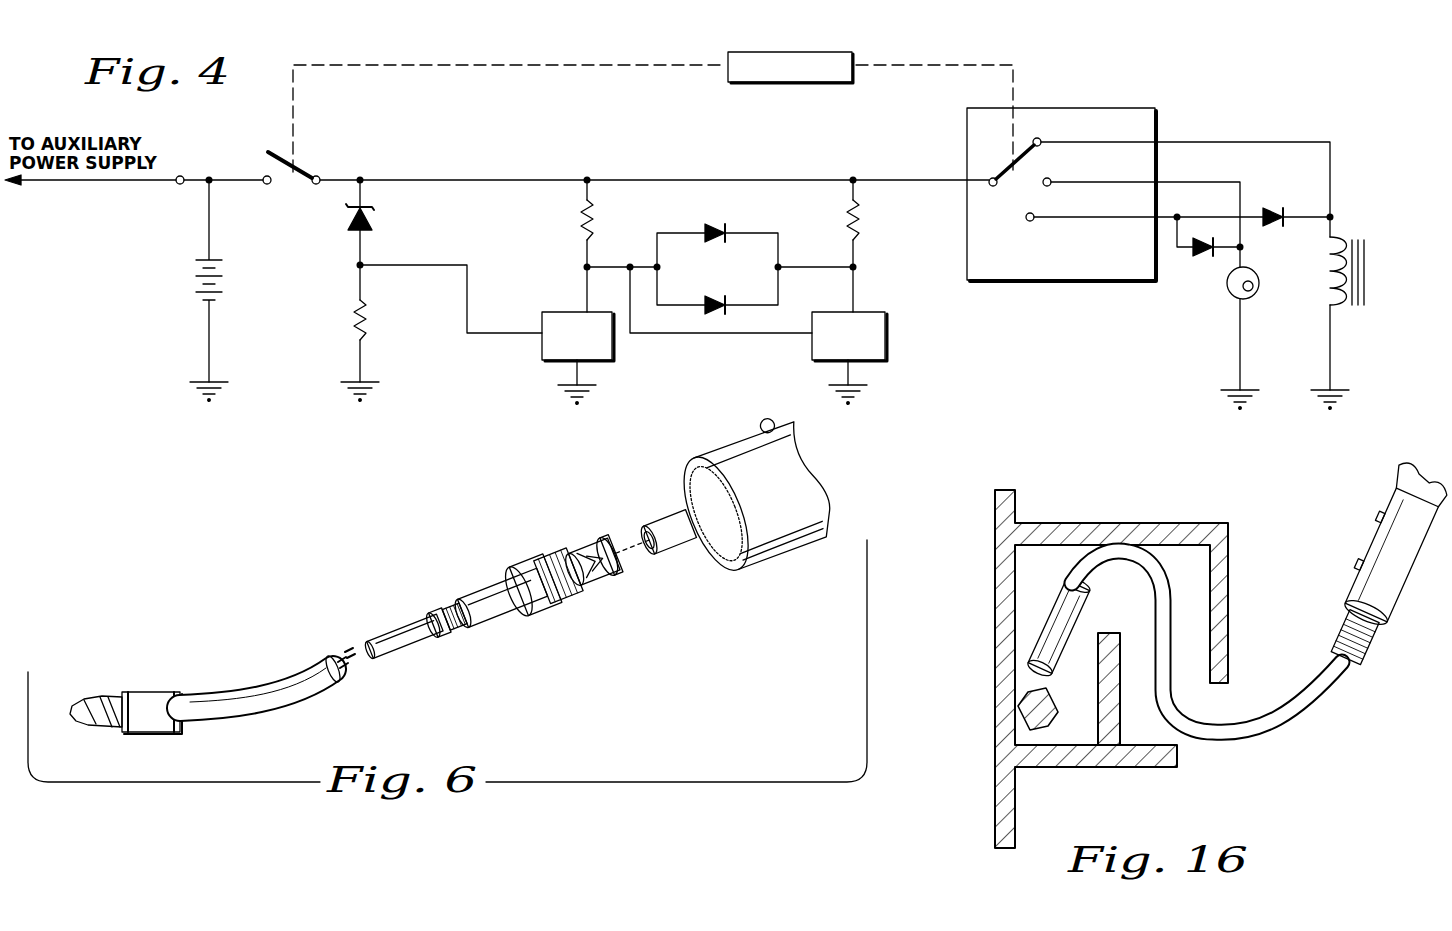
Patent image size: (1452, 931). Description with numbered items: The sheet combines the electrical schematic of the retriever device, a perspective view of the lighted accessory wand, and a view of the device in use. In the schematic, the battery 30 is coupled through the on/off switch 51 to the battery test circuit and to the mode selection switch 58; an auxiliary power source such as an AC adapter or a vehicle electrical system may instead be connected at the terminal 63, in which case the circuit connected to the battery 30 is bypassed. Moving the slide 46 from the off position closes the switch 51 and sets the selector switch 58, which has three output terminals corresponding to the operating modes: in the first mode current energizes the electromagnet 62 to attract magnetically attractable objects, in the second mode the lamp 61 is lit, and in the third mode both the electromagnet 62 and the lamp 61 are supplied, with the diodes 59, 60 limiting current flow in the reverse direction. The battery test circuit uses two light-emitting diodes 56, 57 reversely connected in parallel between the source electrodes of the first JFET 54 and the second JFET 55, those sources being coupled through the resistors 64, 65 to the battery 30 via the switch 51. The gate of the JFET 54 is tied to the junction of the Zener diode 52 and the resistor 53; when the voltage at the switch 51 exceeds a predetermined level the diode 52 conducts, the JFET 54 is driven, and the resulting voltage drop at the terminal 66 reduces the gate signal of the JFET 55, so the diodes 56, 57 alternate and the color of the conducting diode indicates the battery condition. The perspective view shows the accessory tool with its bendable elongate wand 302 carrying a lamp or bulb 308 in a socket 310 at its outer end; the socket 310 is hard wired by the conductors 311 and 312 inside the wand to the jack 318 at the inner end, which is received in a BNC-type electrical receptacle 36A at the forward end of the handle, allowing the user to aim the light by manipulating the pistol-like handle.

In FIG. 4, the battery 30 is at (222, 260).
In FIG. 6, the battery 30 is at (484, 596).
In FIG. 4, the slide member 46 is at (820, 52).
In FIG. 4, the on/off switch 51 is at (305, 165).
In FIG. 4, the Zener diode 52 is at (372, 212).
In FIG. 4, the resistor 53 is at (352, 306).
In FIG. 4, the first JFET 54 is at (554, 312).
In FIG. 4, the second JFET 55 is at (878, 312).
In FIG. 4, the light-emitting diode 56 is at (728, 232).
In FIG. 4, the light-emitting diode 57 is at (730, 300).
In FIG. 4, the mode selection switch 58 is at (1126, 106).
In FIG. 4, the diode 59 is at (1212, 258).
In FIG. 4, the diode 60 is at (1292, 210).
In FIG. 4, the lamp 61 is at (1259, 287).
In FIG. 4, the electromagnet 62 is at (1336, 240).
In FIG. 4, the terminal 63 is at (178, 184).
In FIG. 4, the resistor 64 is at (582, 214).
In FIG. 4, the resistor 65 is at (860, 210).
In FIG. 4, the terminal 66 is at (634, 248).
In FIG. 6, the wand 302 is at (398, 658).
In FIG. 6, the lamp 308 is at (90, 700).
In FIG. 6, the socket 310 is at (152, 692).
In FIG. 6, the conductor 311 is at (332, 658).
In FIG. 6, the conductor 312 is at (340, 676).
In FIG. 6, the jack 318 is at (572, 556).
In FIG. 6, the electrical receptacle 36A is at (676, 560).